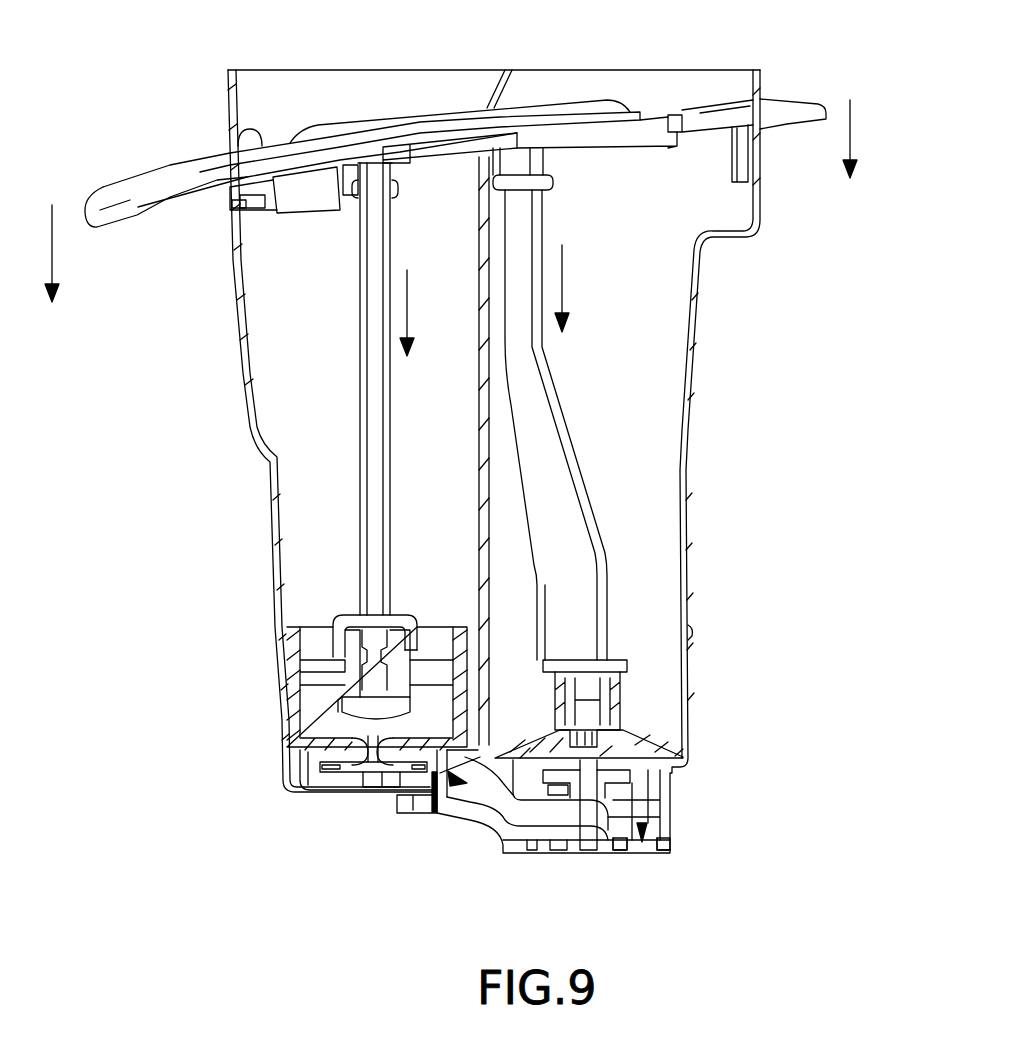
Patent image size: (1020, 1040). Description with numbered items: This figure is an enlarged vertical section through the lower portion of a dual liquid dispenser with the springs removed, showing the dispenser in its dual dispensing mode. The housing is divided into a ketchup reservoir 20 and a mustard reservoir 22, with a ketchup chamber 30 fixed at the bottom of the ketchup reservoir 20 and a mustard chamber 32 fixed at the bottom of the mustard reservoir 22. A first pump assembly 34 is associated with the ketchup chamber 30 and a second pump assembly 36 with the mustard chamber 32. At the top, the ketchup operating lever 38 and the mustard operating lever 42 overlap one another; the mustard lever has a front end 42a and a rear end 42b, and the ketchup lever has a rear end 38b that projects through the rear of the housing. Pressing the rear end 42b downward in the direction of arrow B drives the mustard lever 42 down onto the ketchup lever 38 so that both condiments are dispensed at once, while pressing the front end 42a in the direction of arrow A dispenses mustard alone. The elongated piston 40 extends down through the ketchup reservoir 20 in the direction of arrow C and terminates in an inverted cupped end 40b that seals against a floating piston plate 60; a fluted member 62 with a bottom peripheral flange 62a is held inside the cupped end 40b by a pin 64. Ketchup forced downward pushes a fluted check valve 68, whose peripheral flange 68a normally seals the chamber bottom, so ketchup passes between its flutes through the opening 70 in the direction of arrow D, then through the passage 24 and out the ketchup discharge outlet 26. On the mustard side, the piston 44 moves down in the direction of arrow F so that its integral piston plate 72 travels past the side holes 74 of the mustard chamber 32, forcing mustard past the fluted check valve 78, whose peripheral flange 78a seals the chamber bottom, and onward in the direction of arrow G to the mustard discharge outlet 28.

The first liquid reservoir 20 is at (248, 382).
The second liquid reservoir 22 is at (682, 459).
The passage 24 is at (493, 807).
The first discharge outlet 26 is at (622, 840).
The second discharge outlet 28 is at (650, 848).
The ketchup chamber 30 is at (345, 690).
The mustard chamber 32 is at (620, 745).
The first pump assembly 34 is at (415, 605).
The second pump assembly 36 is at (640, 668).
The first operating lever 38 is at (257, 163).
The opposite end of ketchup lever 38b is at (140, 195).
The piston 40 is at (358, 415).
The inverted cupped end 40b is at (350, 618).
The second operating lever 42 is at (343, 153).
The one end of mustard lever 42a is at (768, 113).
The opposite end of mustard lever 42b is at (135, 185).
The piston 44 is at (537, 435).
The piston plate 60 is at (303, 668).
The fluted member 62 is at (360, 672).
The peripheral flange 62a is at (343, 705).
The pin 64 is at (375, 641).
The fluted check valve 68 is at (370, 762).
The peripheral flange 68a is at (418, 773).
The opening 70 is at (345, 768).
The piston plate 72 is at (583, 723).
The side holes 74 is at (612, 700).
The fluted check valve 78 is at (586, 780).
The peripheral flange 78a is at (555, 776).
The arrow A is at (848, 135).
The arrow B is at (52, 262).
The arrow C is at (407, 305).
The arrow D is at (435, 814).
The arrow F is at (562, 297).
The arrow G is at (648, 790).